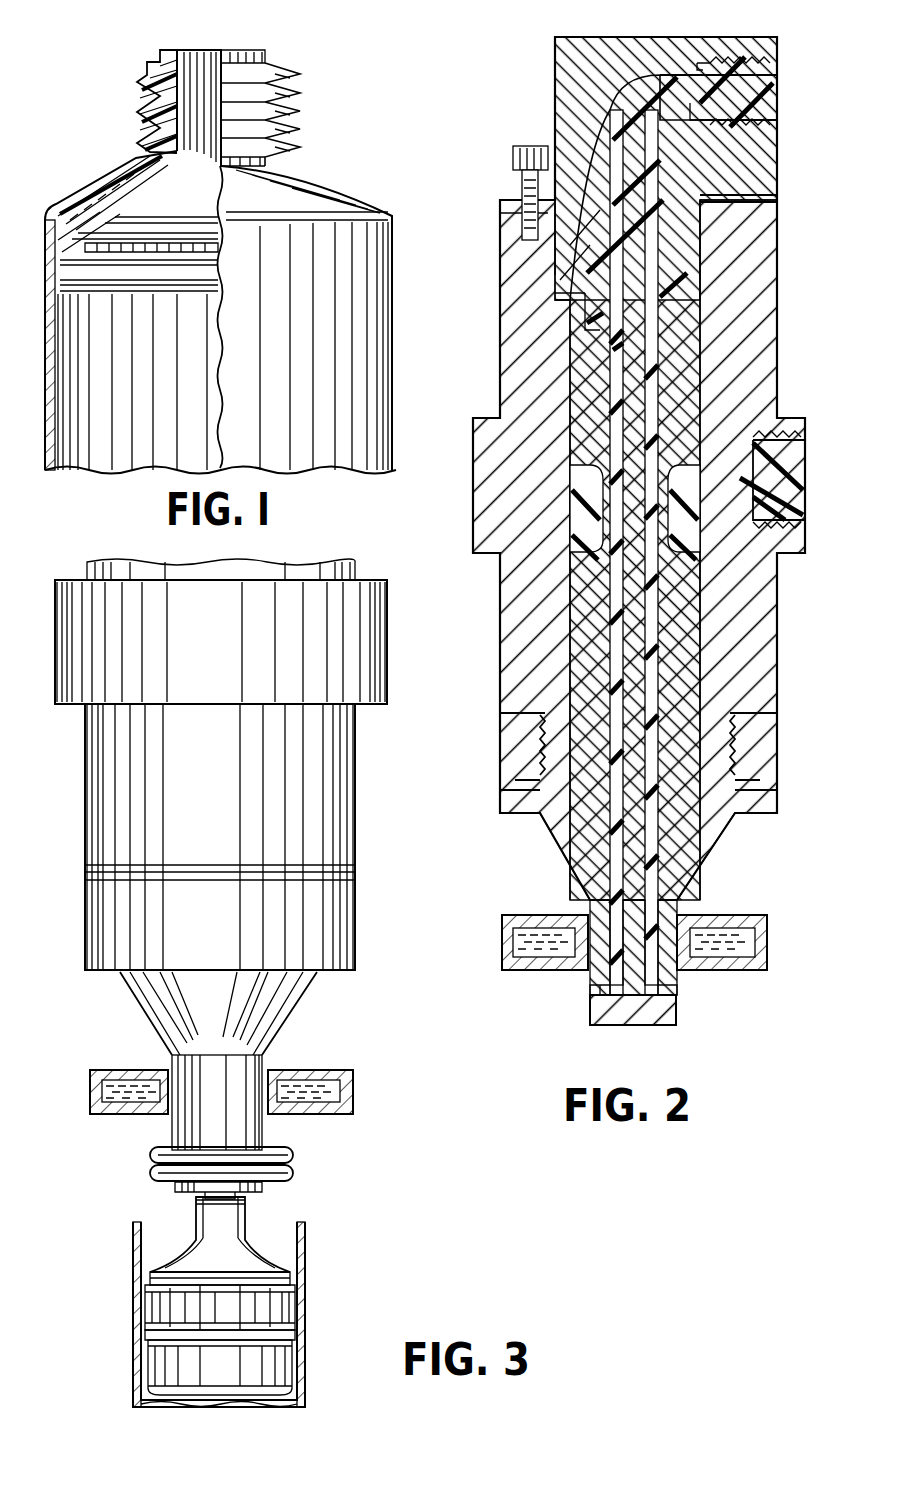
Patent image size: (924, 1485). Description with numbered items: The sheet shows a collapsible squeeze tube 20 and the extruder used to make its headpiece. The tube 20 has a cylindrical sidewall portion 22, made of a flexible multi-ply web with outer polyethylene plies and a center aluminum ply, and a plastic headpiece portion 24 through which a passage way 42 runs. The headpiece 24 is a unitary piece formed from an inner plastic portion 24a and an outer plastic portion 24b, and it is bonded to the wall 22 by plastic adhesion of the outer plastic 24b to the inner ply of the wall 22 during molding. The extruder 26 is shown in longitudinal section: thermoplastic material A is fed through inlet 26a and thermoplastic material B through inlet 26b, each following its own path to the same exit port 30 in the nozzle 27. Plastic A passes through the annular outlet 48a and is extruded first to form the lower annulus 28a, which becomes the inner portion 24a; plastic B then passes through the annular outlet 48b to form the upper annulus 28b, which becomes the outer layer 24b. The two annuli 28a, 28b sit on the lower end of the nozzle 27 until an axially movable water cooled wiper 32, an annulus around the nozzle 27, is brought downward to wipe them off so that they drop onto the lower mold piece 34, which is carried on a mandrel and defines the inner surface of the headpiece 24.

In FIG. 1, the collapsible tube 20 is at (255, 249).
In FIG. 1, the cylindrical sidewall portion 22 is at (383, 318).
In FIG. 3, the cylindrical sidewall portion 22 is at (305, 1350).
In FIG. 1, the plastic headpiece portion 24 is at (206, 138).
In FIG. 1, the inner plastic portion 24a is at (147, 80).
In FIG. 1, the outer plastic portion 24b is at (84, 207).
In FIG. 1, the passage way 42 is at (197, 60).
In FIG. 3, the extruder 26 is at (214, 879).
In FIG. 2, the extruder 26 is at (686, 502).
In FIG. 2, the inlet 26a is at (796, 84).
In FIG. 2, the inlet 26b is at (819, 484).
In FIG. 3, the nozzle 27 is at (262, 1130).
In FIG. 2, the nozzle 27 is at (640, 1028).
In FIG. 3, the lower annulus 28a is at (152, 1173).
In FIG. 3, the upper annulus 28b is at (152, 1156).
In FIG. 2, the port 30 is at (677, 990).
In FIG. 3, the water cooled wiper 32 is at (345, 1080).
In FIG. 2, the water cooled wiper 32 is at (765, 940).
In FIG. 3, the lower mold piece 34 is at (262, 1256).
In FIG. 2, the annular outlet 48a is at (600, 975).
In FIG. 2, the annular outlet 48b is at (592, 992).